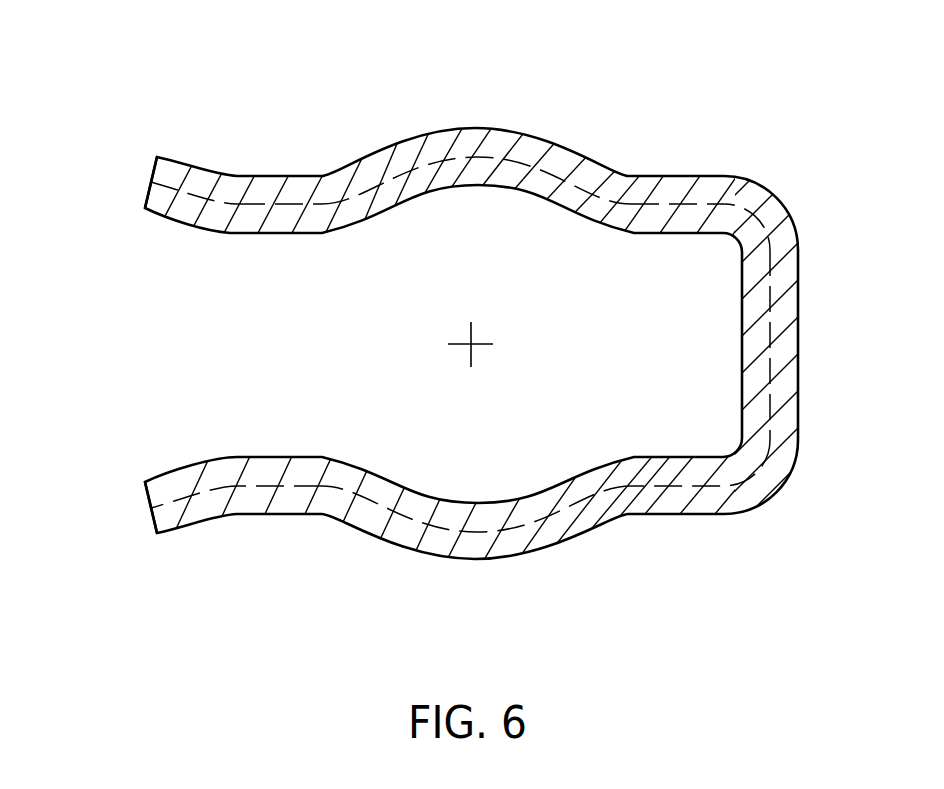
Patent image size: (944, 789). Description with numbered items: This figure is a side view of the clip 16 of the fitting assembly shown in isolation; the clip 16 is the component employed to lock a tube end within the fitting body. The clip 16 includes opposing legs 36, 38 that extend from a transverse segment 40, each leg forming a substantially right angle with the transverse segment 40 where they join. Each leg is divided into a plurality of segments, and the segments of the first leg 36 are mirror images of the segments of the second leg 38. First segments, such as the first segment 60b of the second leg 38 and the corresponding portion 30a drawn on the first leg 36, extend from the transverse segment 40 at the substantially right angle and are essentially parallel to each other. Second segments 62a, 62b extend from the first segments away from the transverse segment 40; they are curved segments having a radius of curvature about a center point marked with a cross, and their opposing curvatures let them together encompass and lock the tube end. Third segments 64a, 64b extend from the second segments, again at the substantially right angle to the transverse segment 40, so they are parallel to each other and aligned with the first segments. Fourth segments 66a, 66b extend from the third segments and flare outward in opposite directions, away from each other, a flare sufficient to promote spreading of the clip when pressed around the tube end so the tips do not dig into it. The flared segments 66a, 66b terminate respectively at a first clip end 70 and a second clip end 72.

The clip 16 is at (605, 104).
The first leg 36 is at (226, 103).
The second leg 38 is at (225, 584).
The transverse segment 40 is at (783, 315).
The first straight portion 30a is at (687, 176).
The first segment of the second leg 60b is at (688, 514).
The second segment of the first leg 62a is at (468, 128).
The second segment of the second leg 62b is at (470, 560).
The third segment of the first leg 64a is at (283, 176).
The third segment of the second leg 64b is at (283, 514).
The fourth segment of the first leg 66a is at (189, 164).
The fourth segment of the second leg 66b is at (187, 528).
The first clip end 70 is at (152, 173).
The second clip end 72 is at (148, 497).